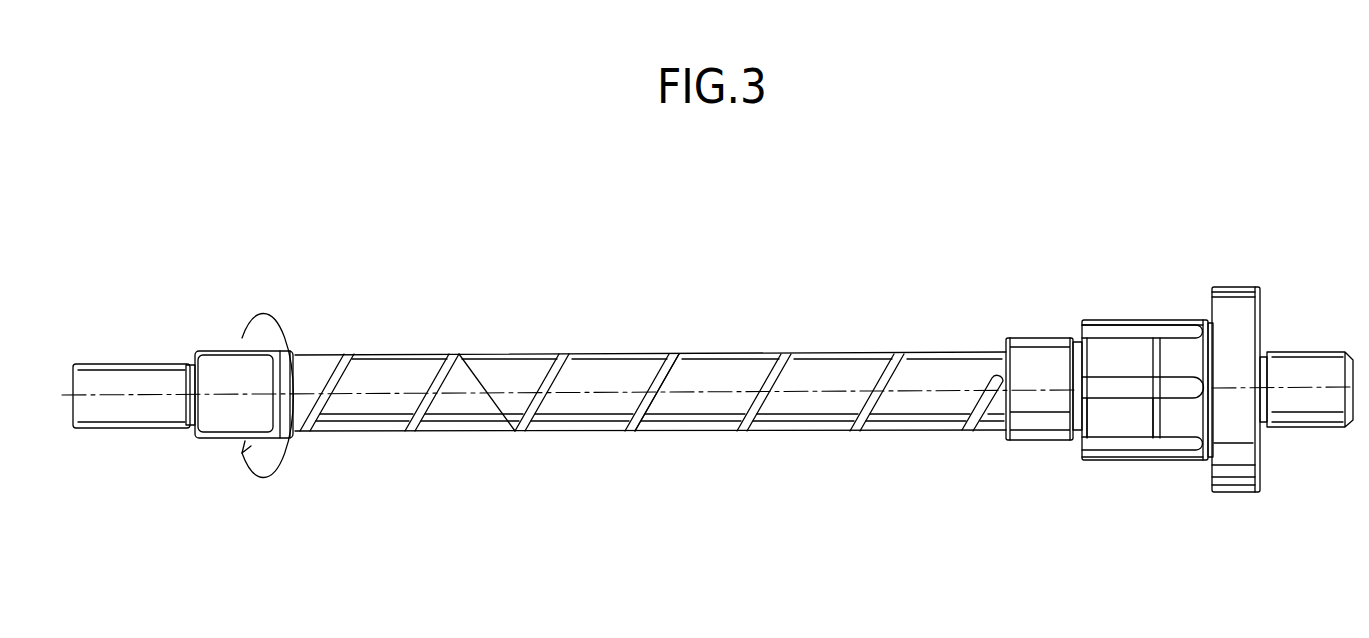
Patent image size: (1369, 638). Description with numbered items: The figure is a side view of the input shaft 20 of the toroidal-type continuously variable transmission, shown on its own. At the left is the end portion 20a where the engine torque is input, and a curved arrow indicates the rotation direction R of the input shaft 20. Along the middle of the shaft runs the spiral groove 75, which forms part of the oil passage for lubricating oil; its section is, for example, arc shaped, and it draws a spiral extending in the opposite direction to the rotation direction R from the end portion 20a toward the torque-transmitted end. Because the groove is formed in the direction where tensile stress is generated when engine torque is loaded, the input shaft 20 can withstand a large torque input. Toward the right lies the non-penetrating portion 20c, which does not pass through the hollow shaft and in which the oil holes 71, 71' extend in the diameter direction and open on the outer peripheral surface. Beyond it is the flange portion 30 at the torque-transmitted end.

The input shaft 20 is at (843, 350).
The end portion 20a is at (217, 413).
The non-penetrating portion 20c is at (1056, 335).
The oil hole 71 is at (1042, 360).
The oil hole 71' is at (1143, 360).
The spiral groove 75 is at (653, 380).
The flange portion 30 is at (1236, 307).
The rotation direction R is at (267, 412).